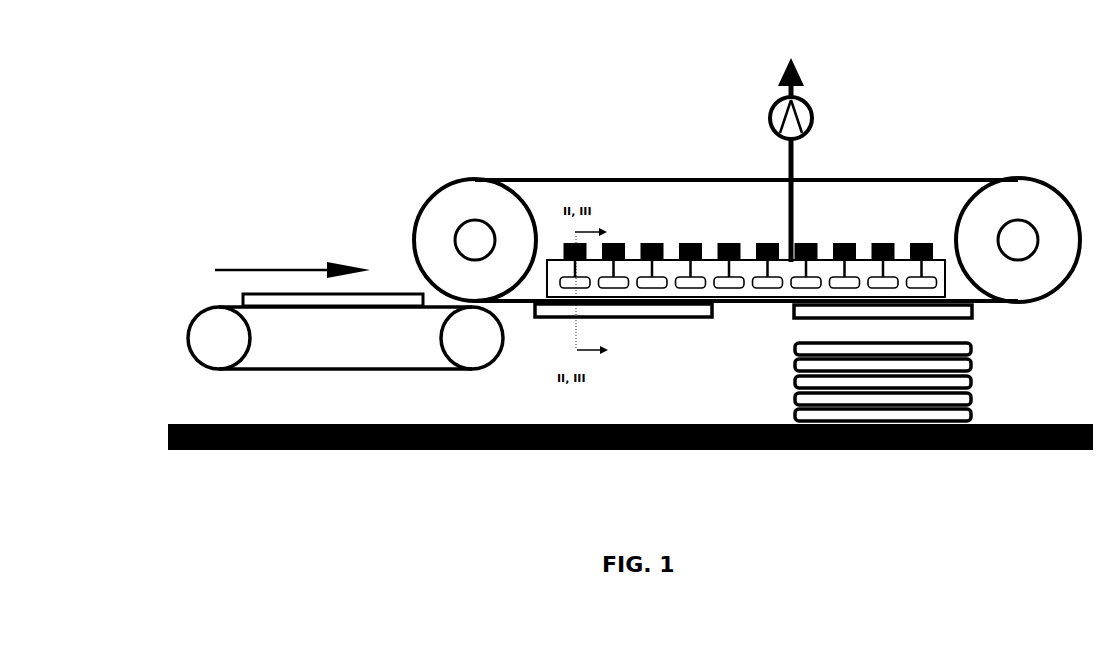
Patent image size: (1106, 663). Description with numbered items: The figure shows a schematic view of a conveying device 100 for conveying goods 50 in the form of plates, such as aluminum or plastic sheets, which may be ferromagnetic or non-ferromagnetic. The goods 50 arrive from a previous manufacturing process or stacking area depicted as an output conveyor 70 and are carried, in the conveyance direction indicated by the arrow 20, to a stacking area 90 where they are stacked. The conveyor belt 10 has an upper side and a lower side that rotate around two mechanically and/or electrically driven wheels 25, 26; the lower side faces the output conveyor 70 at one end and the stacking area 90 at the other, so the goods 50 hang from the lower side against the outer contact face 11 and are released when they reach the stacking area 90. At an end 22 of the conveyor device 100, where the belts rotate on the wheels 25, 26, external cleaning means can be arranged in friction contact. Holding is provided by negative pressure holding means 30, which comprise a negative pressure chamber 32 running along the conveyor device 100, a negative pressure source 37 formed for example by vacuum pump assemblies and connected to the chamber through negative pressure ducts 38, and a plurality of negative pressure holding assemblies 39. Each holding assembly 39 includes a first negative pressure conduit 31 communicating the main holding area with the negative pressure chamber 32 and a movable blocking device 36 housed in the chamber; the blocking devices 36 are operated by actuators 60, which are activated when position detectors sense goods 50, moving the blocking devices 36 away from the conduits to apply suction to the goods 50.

The conveying device 100 is at (393, 85).
The conveyor belt 10 is at (532, 165).
The outer contact face 11 is at (523, 303).
The arrow 20 is at (283, 268).
The end of the conveyor device 22 is at (993, 305).
The wheel 25 is at (450, 213).
The wheel 26 is at (997, 215).
The negative pressure holding means 30 is at (872, 77).
The first negative pressure conduit 31 is at (732, 303).
The negative pressure chamber 32 is at (673, 270).
The movable blocking device 36 is at (702, 283).
The negative pressure source 37 is at (805, 102).
The negative pressure duct 38 is at (790, 167).
The negative pressure holding assembly 39 is at (850, 230).
The goods 50 is at (683, 318).
The actuator 60 is at (923, 247).
The output conveyor 70 is at (207, 275).
The stacking area 90 is at (992, 383).